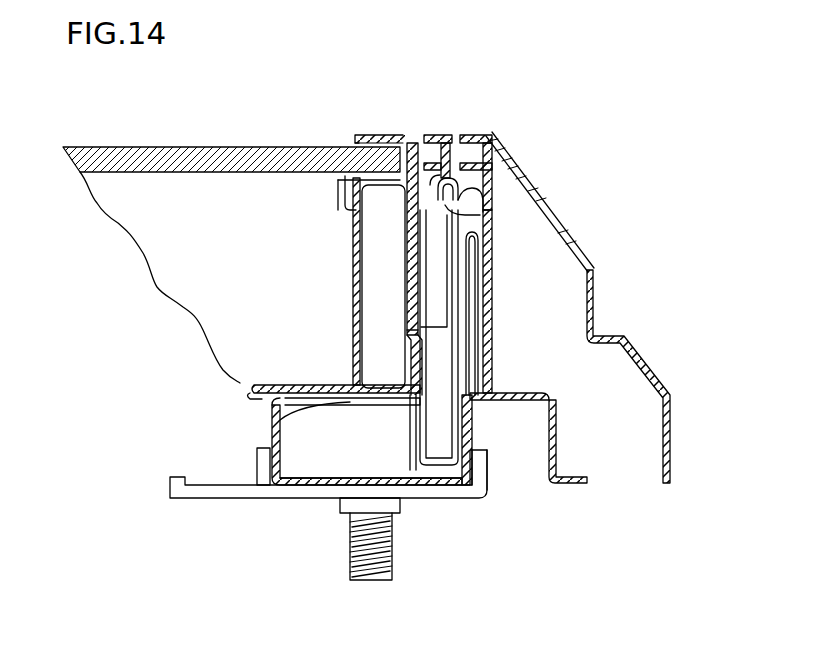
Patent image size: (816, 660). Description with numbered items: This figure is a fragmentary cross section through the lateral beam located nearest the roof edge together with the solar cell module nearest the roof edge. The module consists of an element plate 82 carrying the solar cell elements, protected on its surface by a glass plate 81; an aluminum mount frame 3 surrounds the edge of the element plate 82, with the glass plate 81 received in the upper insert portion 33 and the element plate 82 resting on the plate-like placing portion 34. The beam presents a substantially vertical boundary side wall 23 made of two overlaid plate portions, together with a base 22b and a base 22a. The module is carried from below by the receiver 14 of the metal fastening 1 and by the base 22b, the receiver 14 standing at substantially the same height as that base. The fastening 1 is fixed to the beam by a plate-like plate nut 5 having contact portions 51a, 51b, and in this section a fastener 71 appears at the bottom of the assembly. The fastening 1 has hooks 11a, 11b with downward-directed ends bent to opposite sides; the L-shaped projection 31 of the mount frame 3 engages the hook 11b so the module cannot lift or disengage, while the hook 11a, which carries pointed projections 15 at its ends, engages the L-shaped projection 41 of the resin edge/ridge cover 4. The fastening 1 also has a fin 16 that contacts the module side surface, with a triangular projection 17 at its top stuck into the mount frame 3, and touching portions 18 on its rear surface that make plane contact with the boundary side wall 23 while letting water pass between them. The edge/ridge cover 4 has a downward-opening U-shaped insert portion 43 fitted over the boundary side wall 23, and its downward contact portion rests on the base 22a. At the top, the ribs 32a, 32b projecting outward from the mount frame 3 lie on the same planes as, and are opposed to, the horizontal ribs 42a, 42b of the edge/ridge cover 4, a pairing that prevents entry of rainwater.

The fastening 1 is at (440, 433).
The mount frame 3 is at (406, 262).
The edge/ridge cover 4 is at (671, 462).
The plate nut 5 is at (258, 499).
The hook 11a is at (462, 180).
The hook 11b is at (430, 163).
The receiver 14 is at (332, 400).
The projection 15 is at (455, 192).
The fin 16 is at (443, 412).
The projection 17 is at (420, 333).
The touching portion 18 is at (460, 427).
The base 22a is at (525, 392).
The base 22b is at (262, 398).
The boundary side wall 23 is at (486, 258).
The L-shaped projection 31 is at (458, 214).
The rib 32a is at (443, 135).
The rib 32b is at (455, 150).
The insert portion 33 is at (373, 135).
The placing portion 34 is at (262, 392).
The L-shaped projection 41 is at (478, 205).
The rib 42a is at (492, 140).
The rib 42b is at (500, 162).
The insert portion 43 is at (483, 225).
The contact portion 51a is at (481, 468).
The contact portion 51b is at (262, 462).
The bolt 71 is at (362, 568).
The glass plate 81 is at (172, 147).
The element plate 82 is at (247, 190).